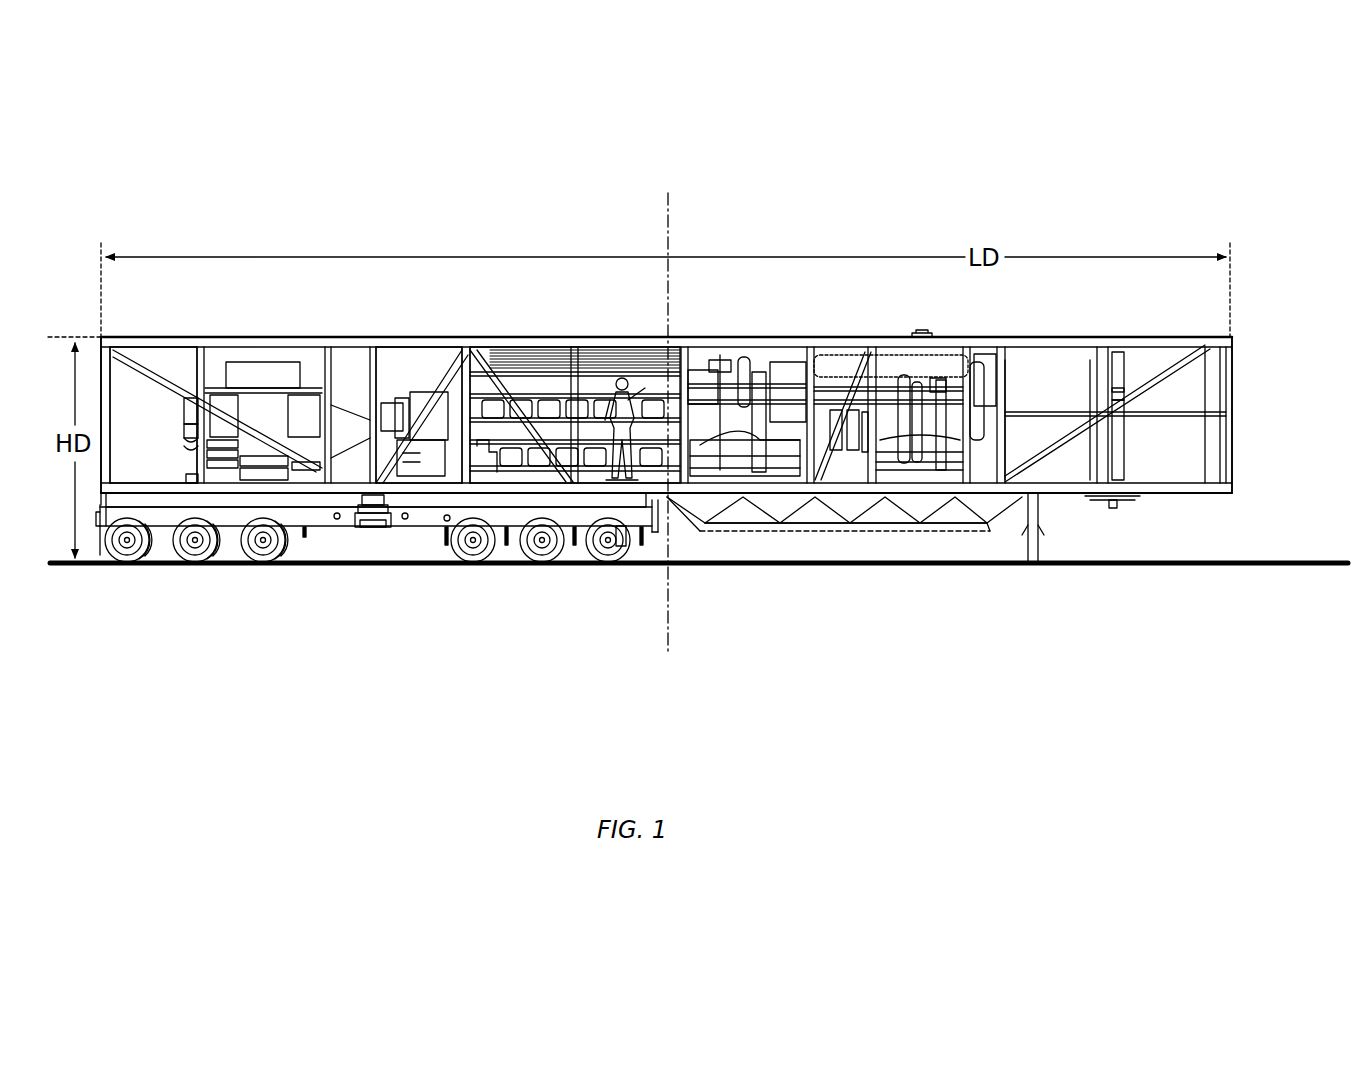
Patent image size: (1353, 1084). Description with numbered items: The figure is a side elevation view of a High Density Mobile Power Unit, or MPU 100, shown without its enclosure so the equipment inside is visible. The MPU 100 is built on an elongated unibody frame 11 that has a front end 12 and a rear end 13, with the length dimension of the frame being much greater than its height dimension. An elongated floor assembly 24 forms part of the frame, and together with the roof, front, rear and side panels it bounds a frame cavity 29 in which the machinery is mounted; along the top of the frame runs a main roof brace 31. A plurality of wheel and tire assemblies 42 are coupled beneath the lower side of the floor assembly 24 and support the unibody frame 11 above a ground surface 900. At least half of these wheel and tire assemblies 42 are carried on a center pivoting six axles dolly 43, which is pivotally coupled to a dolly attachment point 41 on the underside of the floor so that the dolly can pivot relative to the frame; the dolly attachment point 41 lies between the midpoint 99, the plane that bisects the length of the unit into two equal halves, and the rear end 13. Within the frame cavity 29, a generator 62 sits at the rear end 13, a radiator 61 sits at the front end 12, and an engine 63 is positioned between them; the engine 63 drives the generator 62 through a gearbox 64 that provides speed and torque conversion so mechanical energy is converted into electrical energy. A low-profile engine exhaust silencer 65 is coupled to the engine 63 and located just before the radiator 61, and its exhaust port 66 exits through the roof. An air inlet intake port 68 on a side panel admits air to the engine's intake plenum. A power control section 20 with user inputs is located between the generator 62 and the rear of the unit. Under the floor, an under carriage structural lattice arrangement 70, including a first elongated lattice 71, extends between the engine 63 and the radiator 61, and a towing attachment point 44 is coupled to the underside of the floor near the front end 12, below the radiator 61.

The MPU 100 is at (1182, 223).
The unibody frame 11 is at (1237, 347).
The front end 12 is at (1250, 397).
The rear end 13 is at (94, 332).
The power control section 20 is at (141, 390).
The floor assembly 24 is at (160, 483).
The frame cavity 29 is at (430, 365).
The main roof brace 31 is at (545, 345).
The dolly attachment point 41 is at (366, 526).
The wheel and tire assemblies 42 is at (224, 565).
The center pivoting six axles dolly 43 is at (422, 540).
The towing attachment point 44 is at (1115, 509).
The radiator 61 is at (1072, 395).
The generator 62 is at (272, 413).
The engine 63 is at (615, 348).
The gearbox 64 is at (392, 410).
The low-profile engine exhaust silencer 65 is at (796, 356).
The exhaust port 66 is at (920, 332).
The air inlet intake port 68 is at (600, 395).
The under carriage structural lattice arrangement 70 is at (856, 545).
The first elongated lattice 71 is at (793, 530).
The midpoint 99 is at (670, 614).
The ground surface 900 is at (1256, 552).